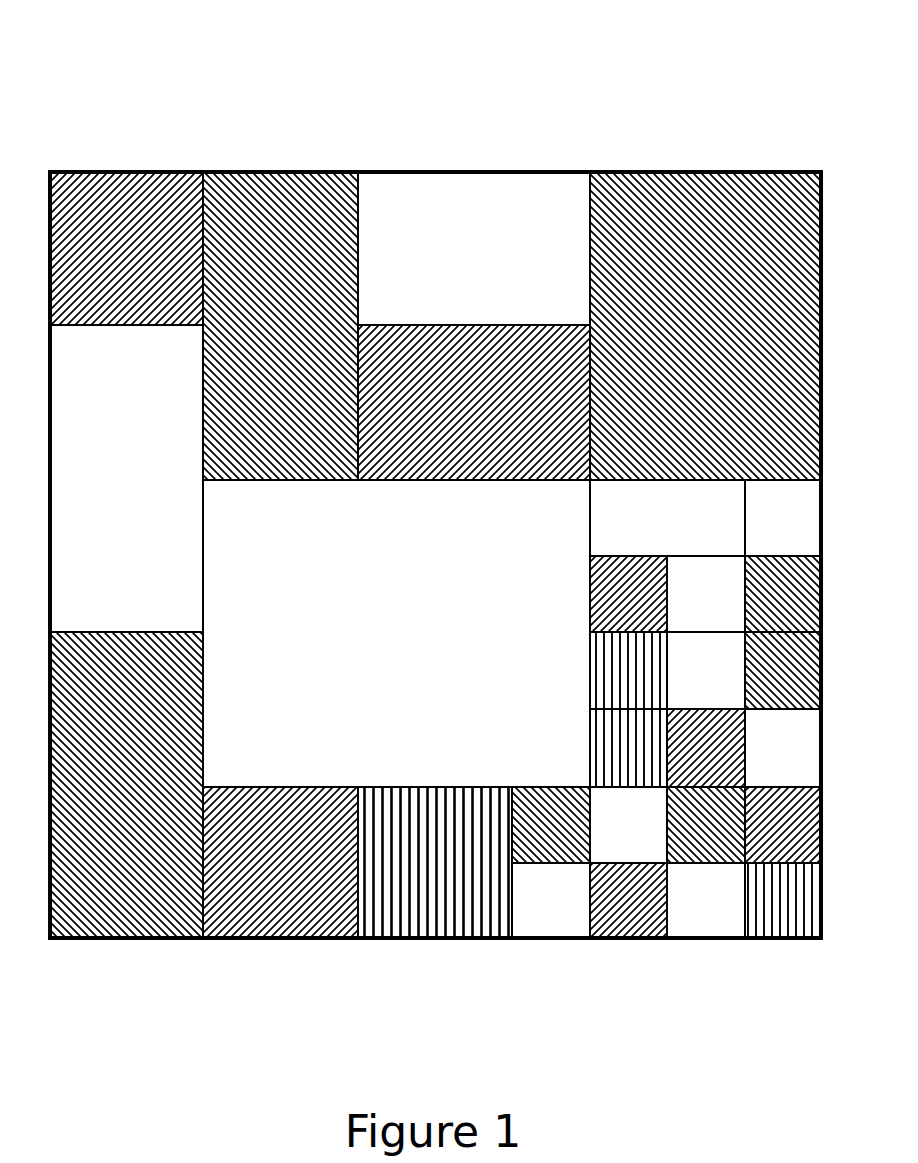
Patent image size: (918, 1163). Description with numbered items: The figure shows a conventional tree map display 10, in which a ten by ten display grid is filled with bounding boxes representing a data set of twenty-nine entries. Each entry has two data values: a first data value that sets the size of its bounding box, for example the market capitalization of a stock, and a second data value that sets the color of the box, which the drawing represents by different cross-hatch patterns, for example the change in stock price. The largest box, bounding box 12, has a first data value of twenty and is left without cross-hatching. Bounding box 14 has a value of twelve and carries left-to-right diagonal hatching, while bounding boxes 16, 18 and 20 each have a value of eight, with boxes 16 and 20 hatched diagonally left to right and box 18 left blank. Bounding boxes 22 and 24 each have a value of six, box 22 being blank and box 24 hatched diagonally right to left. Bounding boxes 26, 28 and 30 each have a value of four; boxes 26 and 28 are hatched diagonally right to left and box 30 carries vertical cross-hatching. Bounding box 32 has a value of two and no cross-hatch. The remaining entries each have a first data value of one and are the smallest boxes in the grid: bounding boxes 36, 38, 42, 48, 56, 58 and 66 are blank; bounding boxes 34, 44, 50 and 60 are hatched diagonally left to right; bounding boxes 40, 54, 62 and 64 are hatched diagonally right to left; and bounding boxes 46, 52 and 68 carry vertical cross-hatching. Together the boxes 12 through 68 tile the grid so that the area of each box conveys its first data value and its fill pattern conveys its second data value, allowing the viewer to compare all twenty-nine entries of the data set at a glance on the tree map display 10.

The tree map display 10 is at (672, 110).
The bounding box 12 is at (386, 644).
The bounding box 14 is at (693, 336).
The bounding box 16 is at (269, 336).
The bounding box 18 is at (116, 489).
The bounding box 20 is at (115, 798).
The bounding box 22 is at (462, 259).
The bounding box 24 is at (462, 413).
The bounding box 26 is at (115, 259).
The bounding box 28 is at (269, 875).
The bounding box 30 is at (424, 875).
The bounding box 32 is at (656, 528).
The bounding box 34 is at (540, 836).
The bounding box 36 is at (540, 913).
The bounding box 38 is at (772, 528).
The bounding box 40 is at (618, 605).
The bounding box 42 is at (694, 605).
The bounding box 44 is at (772, 605).
The bounding box 46 is at (618, 681).
The bounding box 48 is at (694, 681).
The bounding box 50 is at (772, 681).
The bounding box 52 is at (618, 759).
The bounding box 54 is at (694, 759).
The bounding box 56 is at (772, 759).
The bounding box 58 is at (618, 836).
The bounding box 60 is at (694, 836).
The bounding box 62 is at (772, 836).
The bounding box 64 is at (618, 913).
The bounding box 66 is at (694, 913).
The bounding box 68 is at (772, 913).